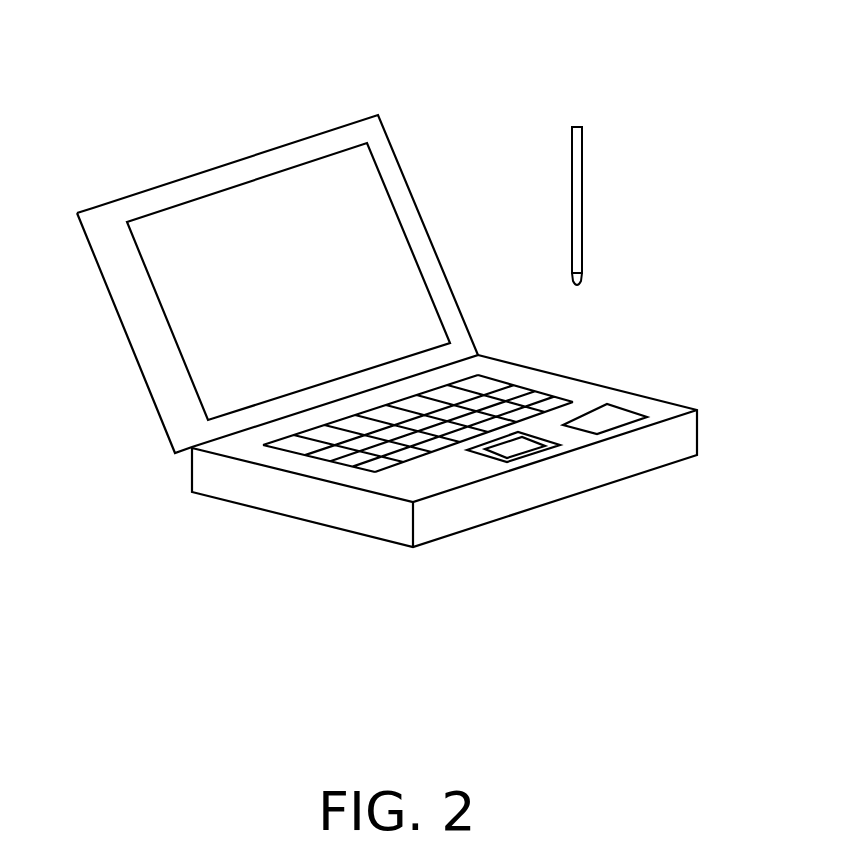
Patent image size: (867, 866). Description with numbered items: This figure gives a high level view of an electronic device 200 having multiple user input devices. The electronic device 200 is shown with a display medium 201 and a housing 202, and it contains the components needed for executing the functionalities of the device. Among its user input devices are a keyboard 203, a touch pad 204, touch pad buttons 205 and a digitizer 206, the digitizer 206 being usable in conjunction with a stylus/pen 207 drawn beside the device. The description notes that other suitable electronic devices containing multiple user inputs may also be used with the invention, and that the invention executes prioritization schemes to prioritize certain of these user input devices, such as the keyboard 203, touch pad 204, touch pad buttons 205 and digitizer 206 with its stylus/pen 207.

The electronic device 200 is at (263, 117).
The display medium 201 is at (308, 282).
The housing 202 is at (223, 487).
The keyboard 203 is at (480, 402).
The touch pad 204 is at (482, 445).
The touch pad buttons 205 is at (540, 447).
The digitizer 206 is at (610, 417).
The stylus/pen 207 is at (580, 172).